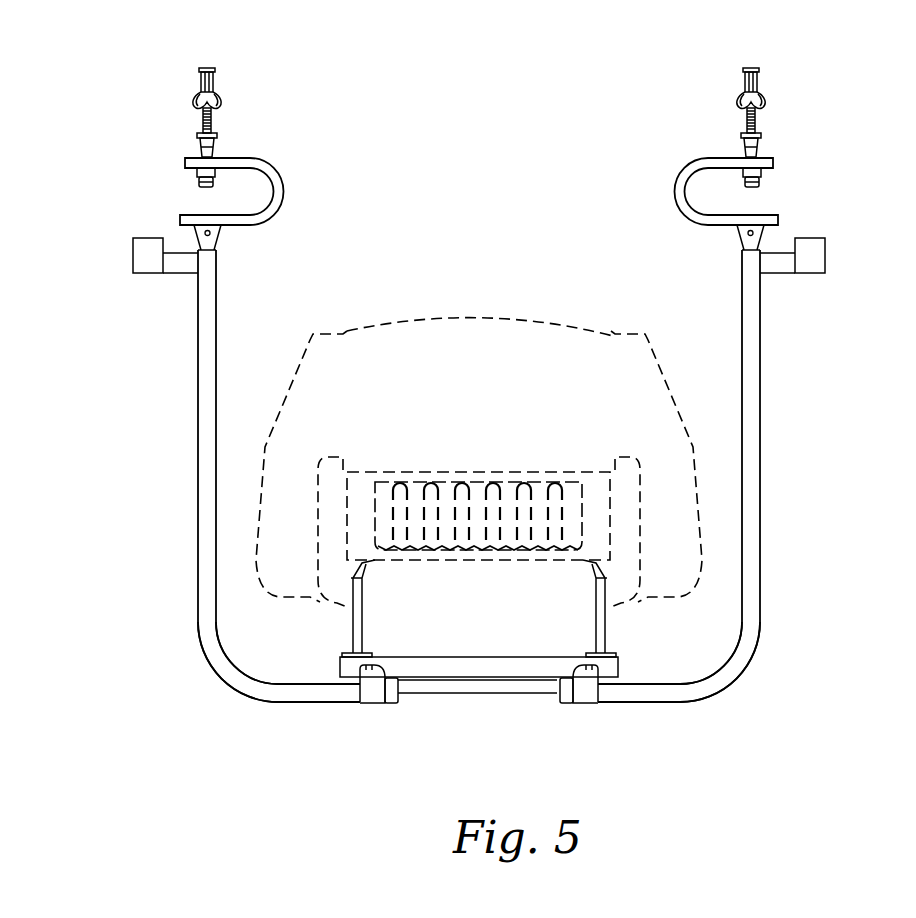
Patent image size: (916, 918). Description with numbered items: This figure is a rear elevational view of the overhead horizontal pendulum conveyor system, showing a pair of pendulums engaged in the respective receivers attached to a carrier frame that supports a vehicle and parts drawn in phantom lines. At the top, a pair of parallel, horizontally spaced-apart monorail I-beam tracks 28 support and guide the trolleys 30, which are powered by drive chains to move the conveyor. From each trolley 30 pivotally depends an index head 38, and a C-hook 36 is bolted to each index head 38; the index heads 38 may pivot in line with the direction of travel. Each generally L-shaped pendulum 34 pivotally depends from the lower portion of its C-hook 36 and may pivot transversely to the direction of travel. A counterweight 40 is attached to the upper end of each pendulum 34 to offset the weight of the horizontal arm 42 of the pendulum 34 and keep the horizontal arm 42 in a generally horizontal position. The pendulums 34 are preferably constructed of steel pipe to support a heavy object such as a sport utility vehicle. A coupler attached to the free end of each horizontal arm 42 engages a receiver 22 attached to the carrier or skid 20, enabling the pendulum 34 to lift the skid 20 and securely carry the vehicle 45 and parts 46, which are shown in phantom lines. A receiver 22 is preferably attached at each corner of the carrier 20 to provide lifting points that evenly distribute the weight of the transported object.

The carrier or skid 20 is at (473, 657).
The receiver 22 is at (377, 704).
The monorail I-beam track 28 is at (208, 67).
The trolley 30 is at (203, 122).
The pendulum 34 is at (198, 383).
The C-hook 36 is at (277, 171).
The index head 38 is at (197, 175).
The counterweight 40 is at (146, 238).
The horizontal arm 42 is at (313, 703).
The vehicle 45 is at (461, 317).
The parts 46 is at (458, 482).